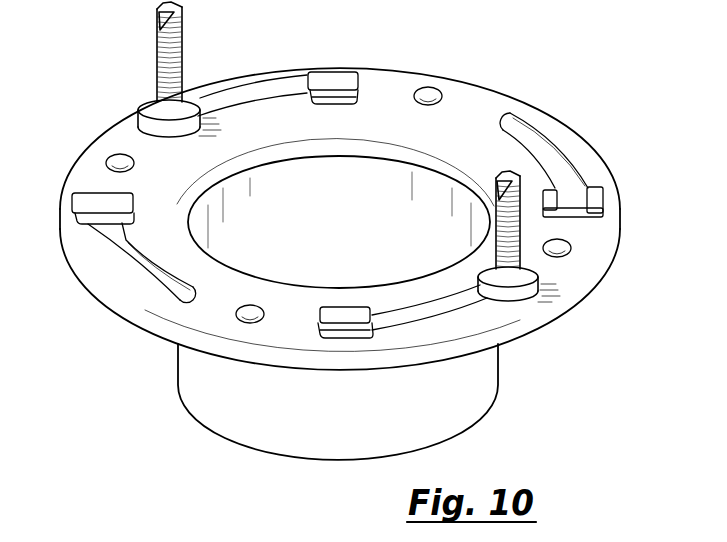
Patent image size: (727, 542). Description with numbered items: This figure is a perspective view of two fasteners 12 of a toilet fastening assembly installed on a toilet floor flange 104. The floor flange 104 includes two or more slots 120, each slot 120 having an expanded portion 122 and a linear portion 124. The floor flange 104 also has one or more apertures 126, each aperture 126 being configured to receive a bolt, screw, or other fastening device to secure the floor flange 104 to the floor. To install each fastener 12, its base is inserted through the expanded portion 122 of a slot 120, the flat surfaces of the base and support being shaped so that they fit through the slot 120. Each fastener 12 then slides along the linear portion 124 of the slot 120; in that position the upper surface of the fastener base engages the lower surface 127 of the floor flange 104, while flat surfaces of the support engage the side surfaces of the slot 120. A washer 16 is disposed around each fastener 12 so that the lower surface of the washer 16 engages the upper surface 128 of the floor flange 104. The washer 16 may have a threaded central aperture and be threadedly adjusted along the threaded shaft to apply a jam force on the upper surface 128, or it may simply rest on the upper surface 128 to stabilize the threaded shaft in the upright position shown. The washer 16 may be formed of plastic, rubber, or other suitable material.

The fastener 12 is at (157, 25).
The washer 16 is at (152, 108).
The floor flange 104 is at (341, 422).
The slot 120 is at (260, 94).
The expanded portion 122 is at (84, 194).
The linear portion 124 is at (130, 267).
The aperture 126 is at (122, 158).
The lower surface 127 is at (533, 333).
The upper surface 128 is at (465, 117).